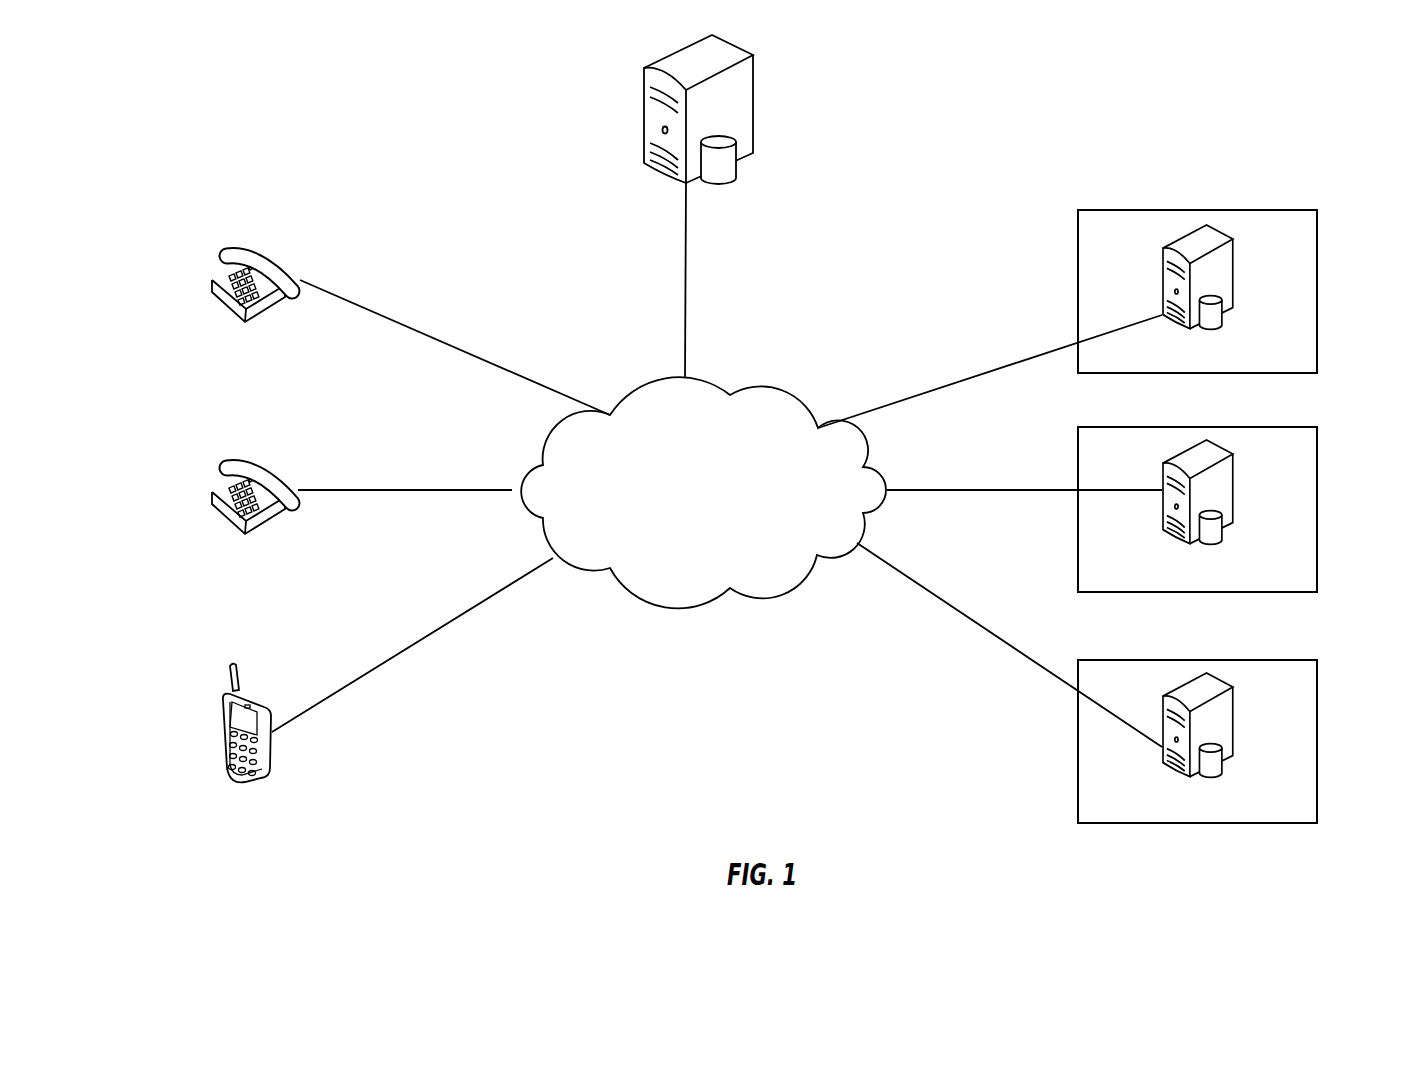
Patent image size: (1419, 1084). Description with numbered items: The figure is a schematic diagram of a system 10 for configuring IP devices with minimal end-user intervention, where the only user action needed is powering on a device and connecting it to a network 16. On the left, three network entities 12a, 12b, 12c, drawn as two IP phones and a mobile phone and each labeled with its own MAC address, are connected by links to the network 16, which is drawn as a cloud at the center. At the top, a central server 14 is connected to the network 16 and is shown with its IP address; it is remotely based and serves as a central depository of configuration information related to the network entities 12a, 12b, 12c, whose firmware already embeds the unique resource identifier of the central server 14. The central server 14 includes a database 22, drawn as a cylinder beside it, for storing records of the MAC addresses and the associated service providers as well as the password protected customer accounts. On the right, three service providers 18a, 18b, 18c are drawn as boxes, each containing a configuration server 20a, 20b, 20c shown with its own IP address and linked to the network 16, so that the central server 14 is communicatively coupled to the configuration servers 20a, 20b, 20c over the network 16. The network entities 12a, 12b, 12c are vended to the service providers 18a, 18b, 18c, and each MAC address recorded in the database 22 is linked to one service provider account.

The system 10 is at (914, 774).
The network entity 12a is at (222, 252).
The network entity 12b is at (218, 485).
The network entity 12c is at (223, 730).
The central server 14 is at (644, 118).
The network 16 is at (800, 395).
The service provider 18a is at (1317, 291).
The service provider 18b is at (1236, 509).
The service provider 18c is at (1317, 742).
The configuration server 20a is at (1162, 262).
The configuration server 20b is at (1162, 480).
The configuration server 20c is at (1162, 712).
The database 22 is at (736, 168).